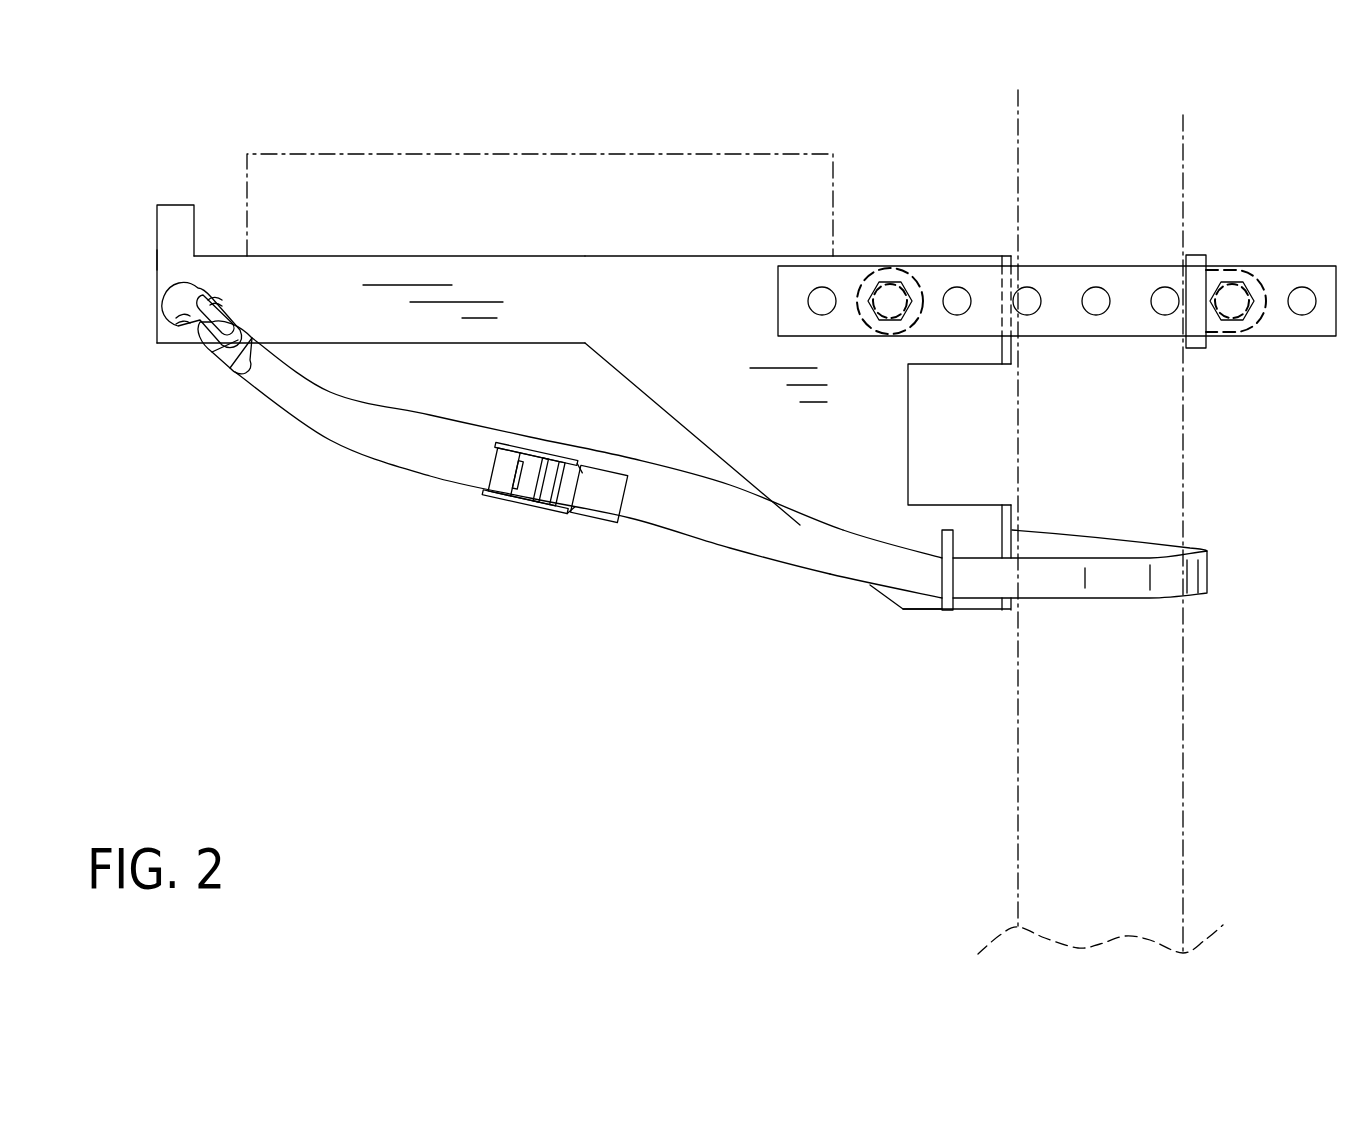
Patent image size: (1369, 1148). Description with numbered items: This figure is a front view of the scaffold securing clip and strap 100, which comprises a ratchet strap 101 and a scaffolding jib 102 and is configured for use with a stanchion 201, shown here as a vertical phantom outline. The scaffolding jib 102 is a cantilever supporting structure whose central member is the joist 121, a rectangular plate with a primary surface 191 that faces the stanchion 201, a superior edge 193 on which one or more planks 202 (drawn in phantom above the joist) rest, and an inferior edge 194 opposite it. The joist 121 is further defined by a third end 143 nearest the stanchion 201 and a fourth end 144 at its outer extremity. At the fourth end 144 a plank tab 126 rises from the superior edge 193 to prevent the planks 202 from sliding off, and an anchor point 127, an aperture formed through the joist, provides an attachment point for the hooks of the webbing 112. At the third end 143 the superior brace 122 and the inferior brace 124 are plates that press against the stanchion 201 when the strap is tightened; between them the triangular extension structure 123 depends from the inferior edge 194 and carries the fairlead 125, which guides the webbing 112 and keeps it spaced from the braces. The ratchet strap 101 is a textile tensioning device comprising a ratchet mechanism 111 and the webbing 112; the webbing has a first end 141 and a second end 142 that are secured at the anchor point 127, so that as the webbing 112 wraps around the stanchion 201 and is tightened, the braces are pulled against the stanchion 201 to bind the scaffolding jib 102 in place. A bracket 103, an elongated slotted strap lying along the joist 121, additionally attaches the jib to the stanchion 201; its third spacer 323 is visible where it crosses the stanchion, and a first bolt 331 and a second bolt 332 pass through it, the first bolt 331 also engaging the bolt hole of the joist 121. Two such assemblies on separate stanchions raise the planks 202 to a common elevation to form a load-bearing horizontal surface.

The scaffold securing clip and strap 100 is at (113, 140).
The ratchet strap 101 is at (383, 452).
The scaffolding jib 102 is at (485, 256).
The bracket 103 is at (1340, 295).
The ratchet mechanism 111 is at (512, 500).
The webbing 112 is at (1195, 574).
The joist 121 is at (545, 272).
The superior brace 122 is at (1010, 352).
The extension structure 123 is at (870, 445).
The inferior brace 124 is at (1010, 518).
The fairlead 125 is at (947, 620).
The plank tab 126 is at (175, 213).
The anchor point 127 is at (193, 288).
The first end 141 is at (248, 372).
The second end 142 is at (290, 352).
The third end 143 is at (992, 522).
The fourth end 144 is at (157, 258).
The primary surface 191 is at (702, 272).
The superior edge 193 is at (408, 256).
The inferior edge 194 is at (533, 346).
The stanchion 201 is at (1133, 692).
The planks 202 is at (348, 186).
The third spacer 323 is at (1200, 262).
The first bolt 331 is at (890, 310).
The second bolt 332 is at (1232, 292).